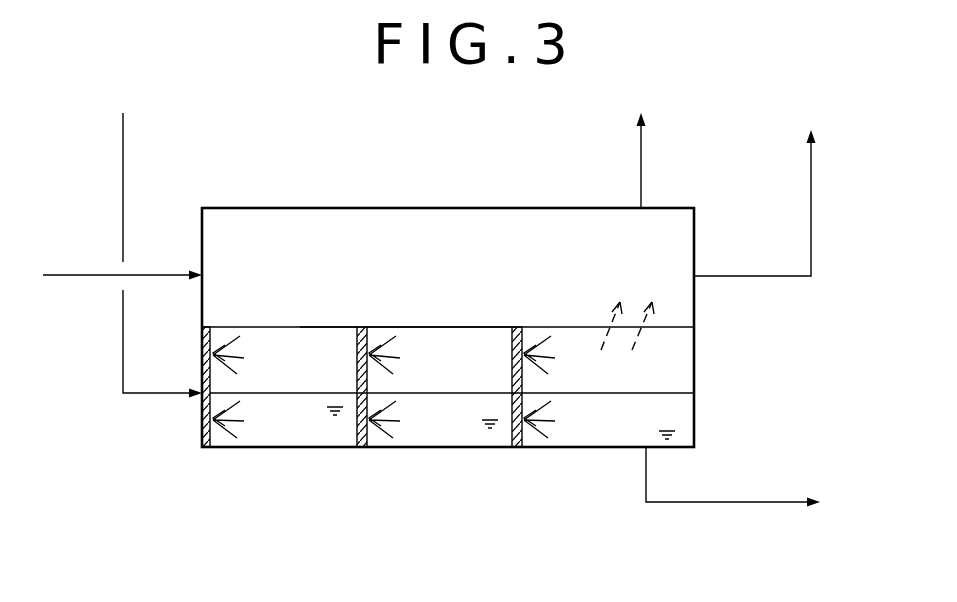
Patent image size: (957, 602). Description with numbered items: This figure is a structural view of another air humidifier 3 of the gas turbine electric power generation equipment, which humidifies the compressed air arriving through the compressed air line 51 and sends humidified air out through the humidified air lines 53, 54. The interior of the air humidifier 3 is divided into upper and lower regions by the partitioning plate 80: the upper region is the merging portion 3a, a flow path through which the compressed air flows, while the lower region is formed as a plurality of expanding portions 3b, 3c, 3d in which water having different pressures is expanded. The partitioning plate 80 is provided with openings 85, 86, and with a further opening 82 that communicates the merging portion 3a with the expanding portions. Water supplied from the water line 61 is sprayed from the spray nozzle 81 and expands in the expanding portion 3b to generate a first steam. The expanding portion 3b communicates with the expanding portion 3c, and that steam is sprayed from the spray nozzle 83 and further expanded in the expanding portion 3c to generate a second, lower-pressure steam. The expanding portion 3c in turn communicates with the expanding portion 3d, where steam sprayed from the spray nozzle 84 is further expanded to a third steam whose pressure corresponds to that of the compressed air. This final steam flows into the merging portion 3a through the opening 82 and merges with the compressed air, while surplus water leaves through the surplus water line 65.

The air humidifier 3 is at (375, 207).
The merging portion 3a is at (448, 275).
The expanding portion 3b is at (280, 388).
The expanding portion 3c is at (435, 385).
The expanding portion 3d is at (599, 385).
The compressed air line 51 is at (71, 277).
The humidified air line 53 is at (811, 217).
The humidified air line 54 is at (641, 161).
The water line 61 is at (123, 148).
The surplus water line 65 is at (715, 503).
The partitioning plate 80 is at (407, 325).
The spray nozzle 81 is at (202, 431).
The opening 82 is at (645, 327).
The spray nozzle 83 is at (357, 439).
The spray nozzle 84 is at (512, 439).
The opening 85 is at (336, 325).
The opening 86 is at (473, 325).